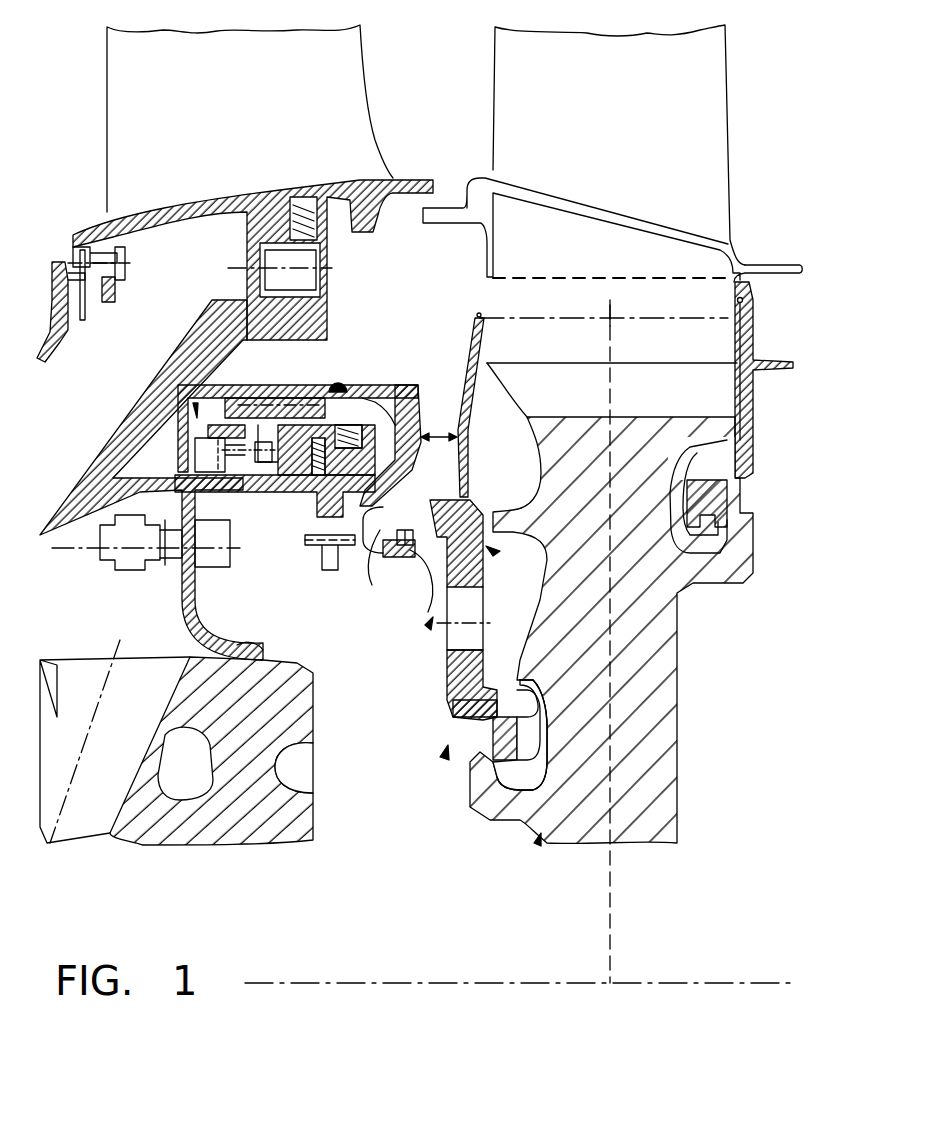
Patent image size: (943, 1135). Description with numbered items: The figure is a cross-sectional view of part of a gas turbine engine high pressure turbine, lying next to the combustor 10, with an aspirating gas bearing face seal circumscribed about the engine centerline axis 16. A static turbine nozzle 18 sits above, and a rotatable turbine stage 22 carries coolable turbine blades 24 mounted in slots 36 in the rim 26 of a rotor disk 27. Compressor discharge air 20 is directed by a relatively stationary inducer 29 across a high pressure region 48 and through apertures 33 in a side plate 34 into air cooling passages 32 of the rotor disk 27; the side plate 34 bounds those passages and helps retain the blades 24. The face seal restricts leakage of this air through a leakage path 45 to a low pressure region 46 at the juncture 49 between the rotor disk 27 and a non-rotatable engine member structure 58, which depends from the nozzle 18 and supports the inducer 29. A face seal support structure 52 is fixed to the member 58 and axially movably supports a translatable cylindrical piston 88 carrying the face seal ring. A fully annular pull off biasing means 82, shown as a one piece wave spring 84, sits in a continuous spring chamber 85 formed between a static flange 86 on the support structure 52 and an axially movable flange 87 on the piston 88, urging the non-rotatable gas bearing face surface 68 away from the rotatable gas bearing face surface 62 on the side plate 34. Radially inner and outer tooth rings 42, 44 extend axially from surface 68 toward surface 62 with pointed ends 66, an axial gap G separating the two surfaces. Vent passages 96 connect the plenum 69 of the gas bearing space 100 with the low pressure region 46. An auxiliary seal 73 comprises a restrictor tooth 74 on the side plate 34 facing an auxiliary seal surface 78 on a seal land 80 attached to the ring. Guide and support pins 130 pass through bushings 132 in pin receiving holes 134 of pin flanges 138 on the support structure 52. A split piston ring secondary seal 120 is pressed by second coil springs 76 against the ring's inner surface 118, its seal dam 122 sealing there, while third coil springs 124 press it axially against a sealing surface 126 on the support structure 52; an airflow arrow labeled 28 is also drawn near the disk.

The combustor 10 is at (68, 130).
The engine centerline axis 16 is at (678, 975).
The static turbine nozzle 18 is at (107, 62).
The high pressure compressor discharge air 20 is at (345, 738).
The rotatable turbine stage 22 is at (538, 843).
The coolable turbine blades 24 is at (728, 107).
The rim 26 is at (740, 365).
The rotor disk 27 is at (678, 728).
The air flow 28 is at (445, 755).
The inducer 29 is at (232, 828).
The air cooling passages 32 is at (523, 610).
The apertures 33 is at (453, 692).
The side plate 34 is at (453, 712).
The slots 36 is at (740, 415).
The radially inner axially extending tooth ring 42 is at (455, 505).
The radially outer axially extending tooth ring 44 is at (445, 385).
The leakage path 45 is at (400, 558).
The low pressure region 46 is at (408, 296).
The high pressure region 48 is at (354, 654).
The juncture 49 is at (428, 625).
The face seal support structure 52 is at (245, 530).
The non-rotatable engine member structure 58 is at (163, 380).
The rotatable gas bearing face surface 62 is at (457, 437).
The pointed ends 66 is at (478, 380).
The non-rotatable gas bearing face surface 68 is at (422, 437).
The plenum 69 is at (436, 426).
The annular auxiliary seal 73 is at (493, 551).
The annular restrictor tooth 74 is at (462, 512).
The second coil springs 76 is at (330, 486).
The auxiliary seal surface 78 is at (410, 540).
The annular seal land 80 is at (440, 575).
The annular pull off biasing means 82 is at (182, 378).
The pull off wave spring 84 is at (203, 455).
The annular spring chamber 85 is at (194, 426).
The static flange 86 is at (238, 474).
The axially movable flange 87 is at (180, 414).
The translatable cylindrical piston 88 is at (275, 395).
The vent passages 96 is at (400, 472).
The gas bearing space 100 is at (470, 420).
The annular inner surface 118 is at (338, 383).
The split piston ring secondary seal 120 is at (298, 425).
The secondary seal dam 122 is at (278, 390).
The third coil springs 124 is at (375, 400).
The sealing surface 126 is at (298, 472).
The guide and support pins 130 is at (348, 570).
The bushings 132 is at (315, 538).
The pin receiving holes 134 is at (340, 560).
The guide and support pin flanges 138 is at (330, 588).
The axial gap G is at (457, 437).